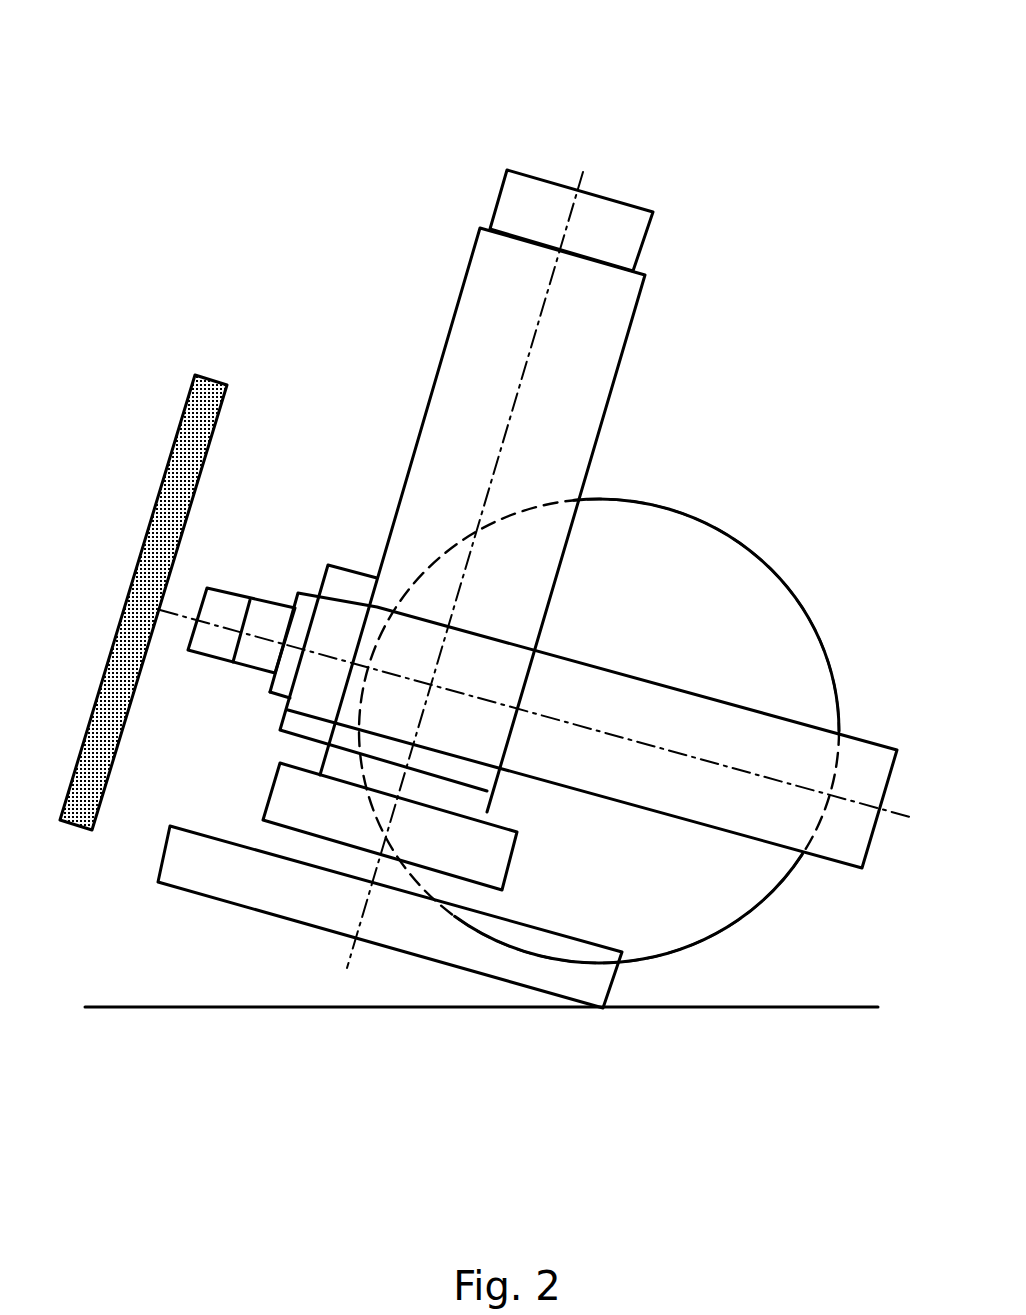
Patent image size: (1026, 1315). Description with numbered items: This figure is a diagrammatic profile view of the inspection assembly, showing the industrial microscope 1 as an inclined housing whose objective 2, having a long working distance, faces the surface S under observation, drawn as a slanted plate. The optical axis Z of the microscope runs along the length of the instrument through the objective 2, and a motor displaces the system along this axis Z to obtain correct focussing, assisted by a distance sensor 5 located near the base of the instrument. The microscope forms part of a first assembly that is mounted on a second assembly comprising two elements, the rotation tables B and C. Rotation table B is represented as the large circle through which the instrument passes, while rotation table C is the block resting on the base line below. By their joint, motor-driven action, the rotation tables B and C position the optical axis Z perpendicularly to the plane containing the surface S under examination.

The industrial microscope 1 is at (598, 303).
The objective 2 is at (227, 608).
The distance sensor 5 is at (482, 851).
The rotation table B is at (753, 601).
The surface under observation S is at (80, 813).
The rotation table C is at (273, 882).
The optical axis Z is at (750, 768).